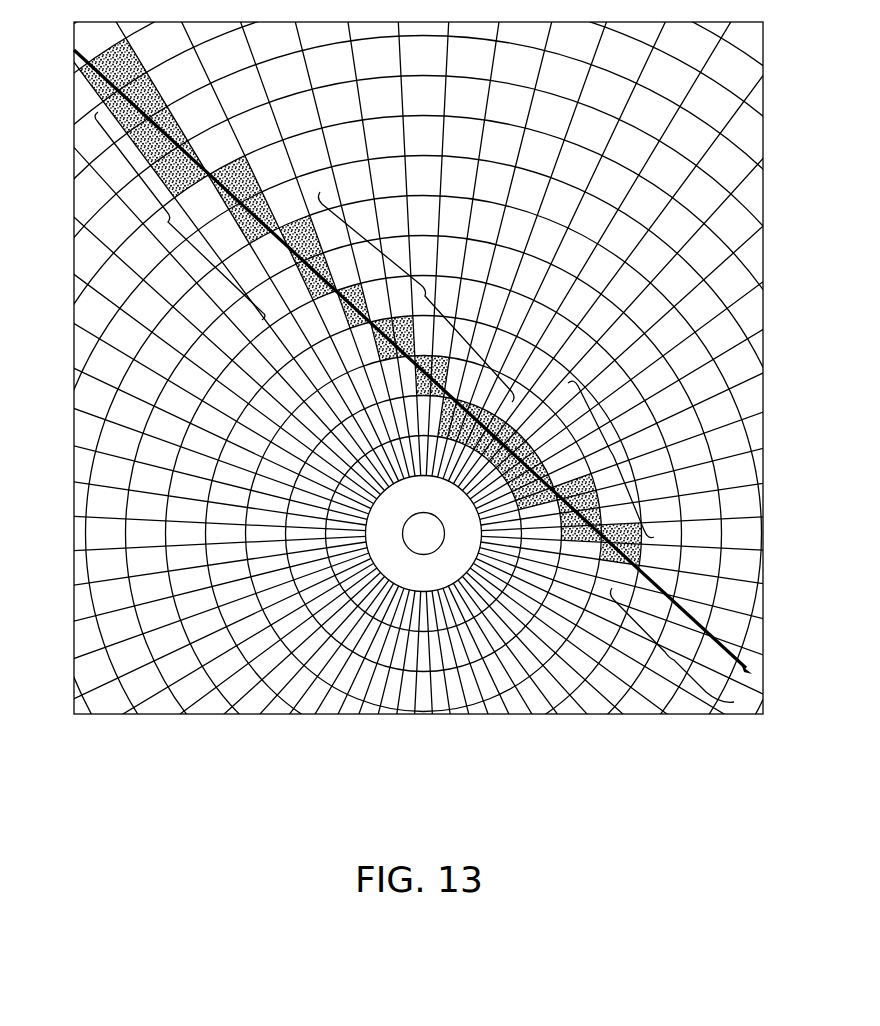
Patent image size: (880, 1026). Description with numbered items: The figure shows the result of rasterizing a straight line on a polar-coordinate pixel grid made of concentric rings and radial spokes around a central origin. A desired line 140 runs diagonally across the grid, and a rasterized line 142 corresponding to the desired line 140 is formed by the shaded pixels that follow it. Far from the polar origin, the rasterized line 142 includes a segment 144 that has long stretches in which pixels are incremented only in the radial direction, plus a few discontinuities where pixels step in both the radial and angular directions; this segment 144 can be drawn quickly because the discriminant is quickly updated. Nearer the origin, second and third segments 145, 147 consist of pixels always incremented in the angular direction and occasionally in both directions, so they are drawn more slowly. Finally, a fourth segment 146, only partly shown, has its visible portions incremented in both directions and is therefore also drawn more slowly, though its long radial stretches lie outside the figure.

The desired line 140 is at (726, 630).
The rasterized line 142 is at (754, 672).
The segment 144 is at (170, 219).
The second segment 145 is at (614, 454).
The fourth segment 146 is at (668, 663).
The third segment 147 is at (424, 289).